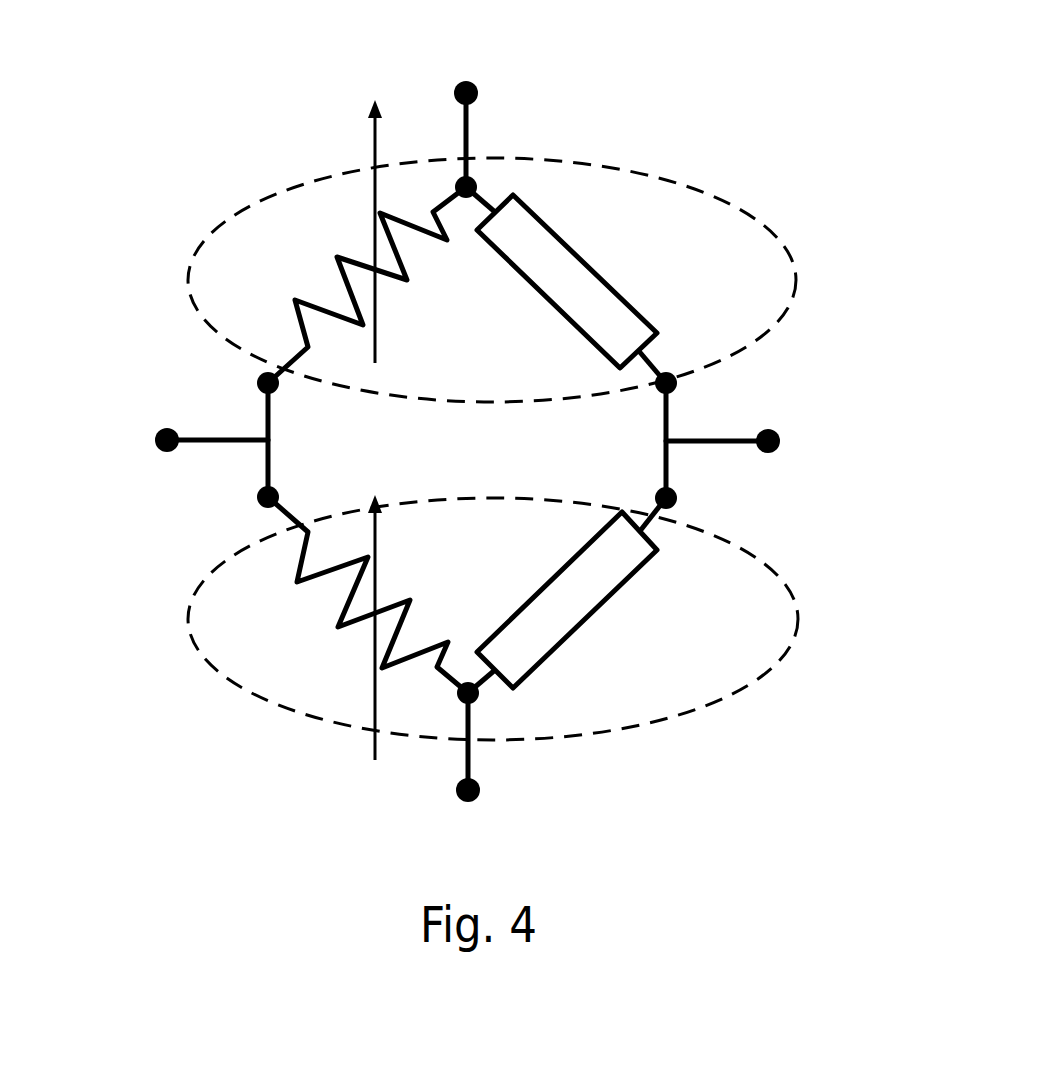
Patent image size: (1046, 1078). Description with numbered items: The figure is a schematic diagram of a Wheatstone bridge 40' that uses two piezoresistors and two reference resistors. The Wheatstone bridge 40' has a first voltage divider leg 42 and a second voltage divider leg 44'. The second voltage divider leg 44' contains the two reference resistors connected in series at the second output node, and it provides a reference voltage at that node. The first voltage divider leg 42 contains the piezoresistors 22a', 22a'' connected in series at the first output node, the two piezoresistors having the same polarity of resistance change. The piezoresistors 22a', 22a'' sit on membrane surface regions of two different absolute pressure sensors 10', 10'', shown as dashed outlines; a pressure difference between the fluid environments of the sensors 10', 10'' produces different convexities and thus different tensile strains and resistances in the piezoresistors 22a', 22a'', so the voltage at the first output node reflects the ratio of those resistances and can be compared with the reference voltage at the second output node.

The Wheatstone bridge 40' is at (467, 429).
The absolute pressure sensor 10' is at (494, 280).
The absolute pressure sensor 10'' is at (497, 619).
The piezoresistor 22a' is at (347, 241).
The piezoresistor 22a'' is at (306, 627).
The first voltage divider leg 42 is at (215, 391).
The second voltage divider leg 44' is at (744, 381).